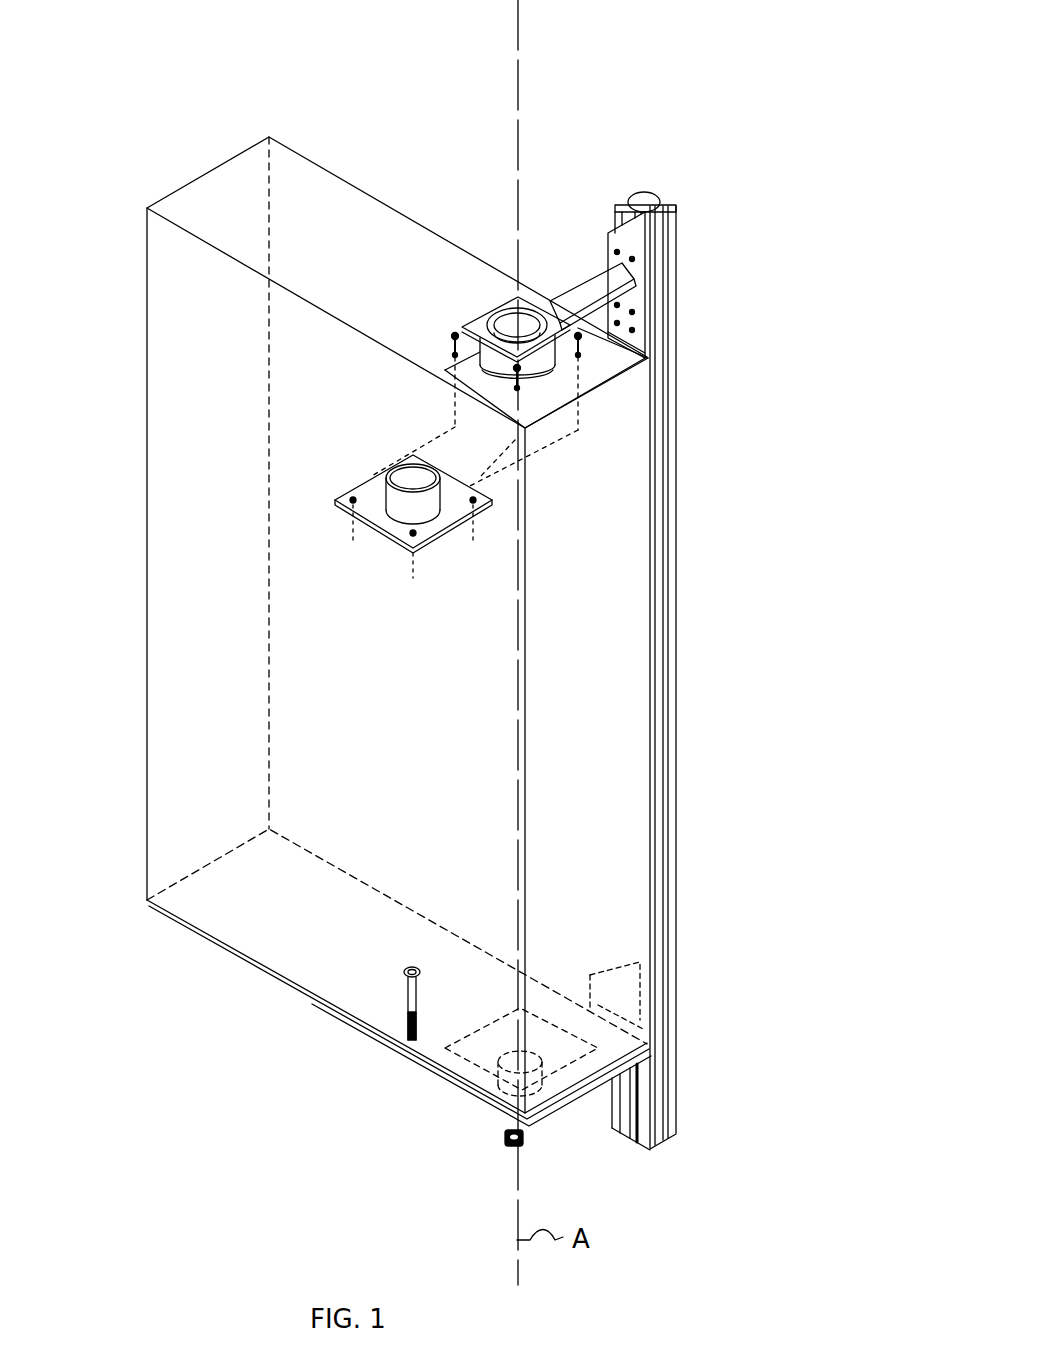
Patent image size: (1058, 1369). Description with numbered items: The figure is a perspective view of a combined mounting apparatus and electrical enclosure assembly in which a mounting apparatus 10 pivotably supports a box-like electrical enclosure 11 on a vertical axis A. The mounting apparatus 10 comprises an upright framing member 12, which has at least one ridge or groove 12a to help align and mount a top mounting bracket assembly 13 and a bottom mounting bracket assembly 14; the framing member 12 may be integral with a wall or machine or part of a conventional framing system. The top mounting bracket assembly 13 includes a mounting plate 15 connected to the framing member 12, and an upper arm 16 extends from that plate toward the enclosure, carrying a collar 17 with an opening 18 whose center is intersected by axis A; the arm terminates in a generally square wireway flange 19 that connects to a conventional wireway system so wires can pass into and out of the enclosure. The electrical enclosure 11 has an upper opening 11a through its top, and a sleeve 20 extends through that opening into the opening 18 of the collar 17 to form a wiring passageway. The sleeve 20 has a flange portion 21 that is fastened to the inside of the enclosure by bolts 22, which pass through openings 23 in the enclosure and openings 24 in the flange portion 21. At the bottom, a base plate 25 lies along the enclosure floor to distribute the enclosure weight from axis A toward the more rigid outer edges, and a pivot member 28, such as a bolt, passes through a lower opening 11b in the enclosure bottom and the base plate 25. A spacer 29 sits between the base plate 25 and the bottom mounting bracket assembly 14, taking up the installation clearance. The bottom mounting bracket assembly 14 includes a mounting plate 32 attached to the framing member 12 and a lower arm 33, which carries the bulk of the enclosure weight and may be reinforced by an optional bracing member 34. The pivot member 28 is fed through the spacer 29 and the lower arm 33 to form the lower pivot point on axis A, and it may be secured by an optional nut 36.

The mounting apparatus 10 is at (691, 144).
The electrical enclosure 11 is at (452, 625).
The upper opening 11a is at (565, 398).
The lower opening 11b is at (690, 1025).
The framing member 12 is at (714, 671).
The ridge or groove 12a is at (678, 237).
The top mounting bracket assembly 13 is at (545, 262).
The bottom mounting bracket assembly 14 is at (572, 1110).
The mounting plate 15 is at (633, 300).
The upper arm 16 is at (565, 295).
The collar 17 is at (583, 392).
The opening 18 is at (497, 313).
The wireway flange 19 is at (478, 330).
The sleeve 20 is at (387, 529).
The flange portion 21 is at (372, 528).
The bolts 22 is at (565, 358).
The openings 23 is at (582, 357).
The openings 24 is at (488, 510).
The base plate 25 is at (340, 1015).
The pivot member 28 is at (407, 990).
The spacer 29 is at (452, 1085).
The mounting plate 32 is at (595, 975).
The lower arm 33 is at (455, 1095).
The bracing member 34 is at (653, 1058).
The nut 36 is at (507, 1140).